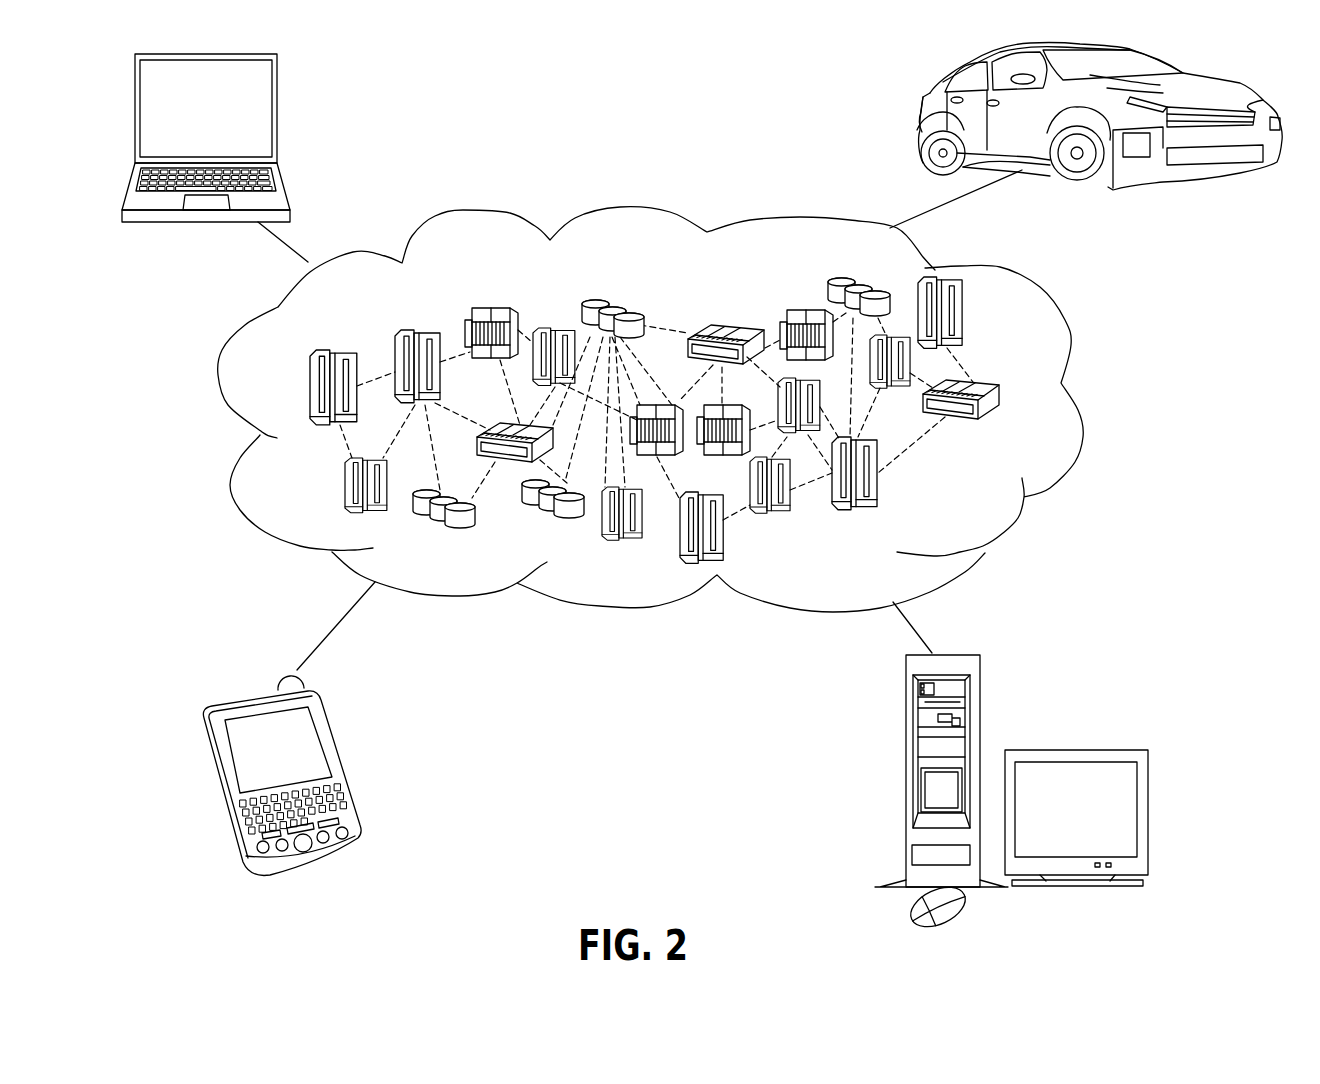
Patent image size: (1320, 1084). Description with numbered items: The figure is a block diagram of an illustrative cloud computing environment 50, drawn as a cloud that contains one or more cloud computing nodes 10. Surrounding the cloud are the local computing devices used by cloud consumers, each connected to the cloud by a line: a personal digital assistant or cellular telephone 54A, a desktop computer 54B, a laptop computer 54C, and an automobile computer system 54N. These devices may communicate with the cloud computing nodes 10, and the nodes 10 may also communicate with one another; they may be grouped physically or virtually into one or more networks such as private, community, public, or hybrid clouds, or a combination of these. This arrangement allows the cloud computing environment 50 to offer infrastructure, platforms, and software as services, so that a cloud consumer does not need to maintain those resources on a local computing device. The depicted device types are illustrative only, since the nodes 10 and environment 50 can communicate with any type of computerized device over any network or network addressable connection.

The cloud computing node 10 is at (992, 512).
The cloud computing environment 50 is at (1073, 402).
The personal digital assistant or cellular telephone 54A is at (332, 732).
The desktop computer 54B is at (904, 716).
The laptop computer 54C is at (277, 92).
The automobile computer system 54N is at (920, 110).